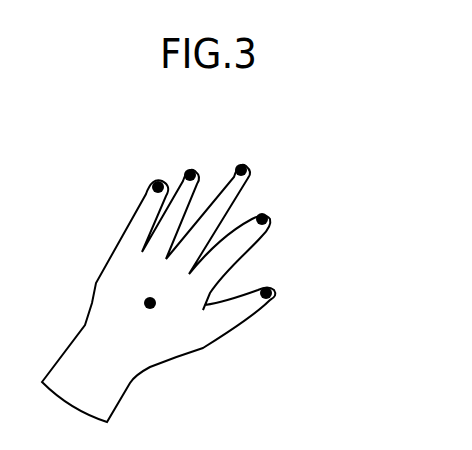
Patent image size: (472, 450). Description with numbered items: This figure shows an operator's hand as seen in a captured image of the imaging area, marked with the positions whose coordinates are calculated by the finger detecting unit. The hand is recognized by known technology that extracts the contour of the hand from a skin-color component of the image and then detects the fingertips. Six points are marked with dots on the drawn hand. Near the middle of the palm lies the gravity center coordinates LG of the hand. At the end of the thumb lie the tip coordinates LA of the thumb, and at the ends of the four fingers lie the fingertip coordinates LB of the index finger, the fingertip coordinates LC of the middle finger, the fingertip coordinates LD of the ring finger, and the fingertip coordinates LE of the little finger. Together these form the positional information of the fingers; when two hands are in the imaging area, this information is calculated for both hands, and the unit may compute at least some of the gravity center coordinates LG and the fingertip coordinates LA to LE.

The fingertip coordinates of the little finger LE is at (128, 174).
The fingertip coordinates of the ring finger LD is at (199, 160).
The fingertip coordinates of the middle finger LC is at (276, 160).
The fingertip coordinates of the index finger LB is at (296, 209).
The tip coordinates of the thumb LA is at (305, 296).
The gravity center coordinates of the hand LG is at (142, 318).